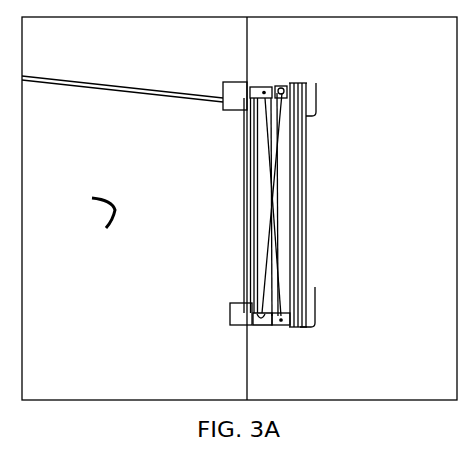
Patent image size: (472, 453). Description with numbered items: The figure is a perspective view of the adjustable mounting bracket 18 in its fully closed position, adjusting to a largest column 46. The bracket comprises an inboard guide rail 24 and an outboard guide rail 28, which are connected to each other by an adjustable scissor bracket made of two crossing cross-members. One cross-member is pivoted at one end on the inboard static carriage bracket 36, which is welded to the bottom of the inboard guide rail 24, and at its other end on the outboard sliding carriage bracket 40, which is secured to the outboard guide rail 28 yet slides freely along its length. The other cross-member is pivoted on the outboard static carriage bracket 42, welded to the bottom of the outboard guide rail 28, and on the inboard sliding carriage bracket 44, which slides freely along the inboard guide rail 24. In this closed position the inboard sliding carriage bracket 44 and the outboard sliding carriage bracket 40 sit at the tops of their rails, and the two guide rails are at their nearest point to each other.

The adjustable mounting bracket 18 is at (358, 130).
The inboard guide rail 24 is at (248, 198).
The outboard guide rail 28 is at (304, 198).
The inboard static carriage bracket 36 is at (262, 329).
The outboard sliding carriage bracket 40 is at (282, 88).
The outboard static carriage bracket 42 is at (281, 330).
The inboard sliding carriage bracket 44 is at (266, 85).
The largest column 46 is at (96, 220).